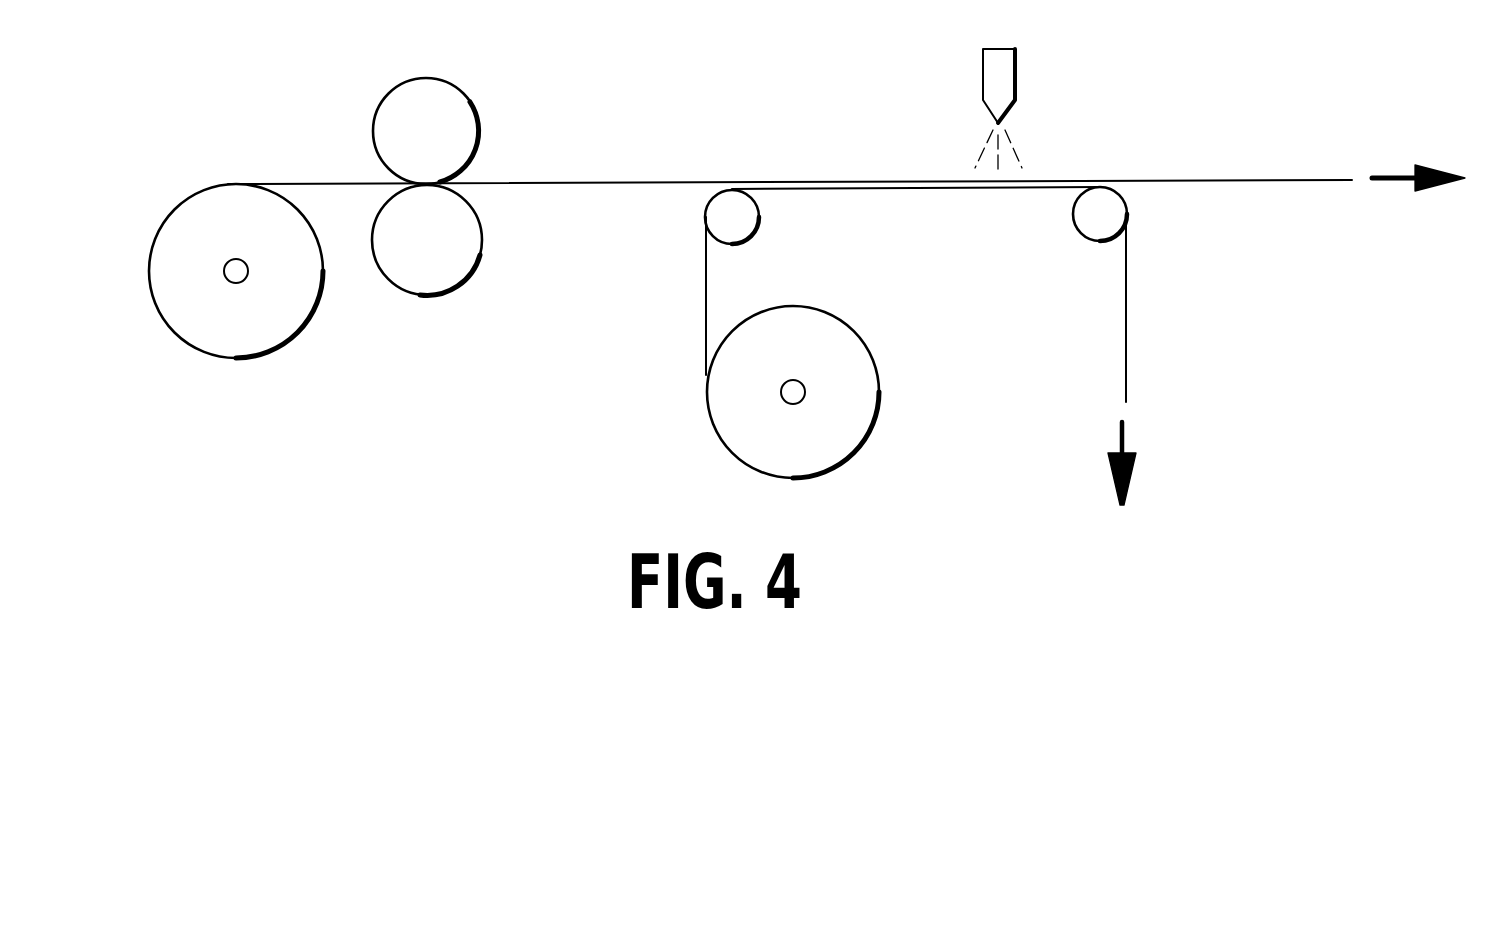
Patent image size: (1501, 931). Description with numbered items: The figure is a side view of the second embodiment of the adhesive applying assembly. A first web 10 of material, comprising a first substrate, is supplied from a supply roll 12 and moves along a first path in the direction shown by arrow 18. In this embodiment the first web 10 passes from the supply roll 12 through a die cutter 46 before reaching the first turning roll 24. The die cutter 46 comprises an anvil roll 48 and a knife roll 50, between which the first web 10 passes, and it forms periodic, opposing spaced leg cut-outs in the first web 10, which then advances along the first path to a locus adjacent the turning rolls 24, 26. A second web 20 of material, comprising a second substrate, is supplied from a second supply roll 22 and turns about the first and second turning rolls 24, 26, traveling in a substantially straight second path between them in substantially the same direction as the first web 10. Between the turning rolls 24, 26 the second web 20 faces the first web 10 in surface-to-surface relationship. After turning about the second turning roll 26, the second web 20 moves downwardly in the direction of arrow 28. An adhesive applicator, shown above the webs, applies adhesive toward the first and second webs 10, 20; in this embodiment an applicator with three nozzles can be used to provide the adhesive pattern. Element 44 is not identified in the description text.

The first web 10 is at (311, 183).
The supply roll 12 is at (322, 303).
The arrow 18 is at (1392, 172).
The second web 20 is at (703, 298).
The second supply roll 22 is at (878, 370).
The first turning roll 24 is at (760, 222).
The second turning roll 26 is at (1073, 217).
The arrow 28 is at (1127, 437).
The spray nozzle 44 is at (982, 75).
The die cutter 46 is at (338, 114).
The anvil roll 48 is at (442, 80).
The knife roll 50 is at (462, 278).